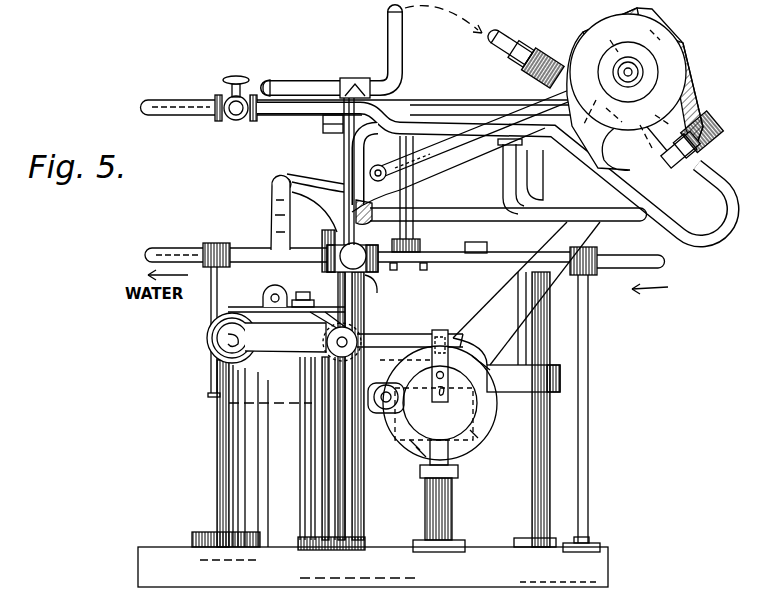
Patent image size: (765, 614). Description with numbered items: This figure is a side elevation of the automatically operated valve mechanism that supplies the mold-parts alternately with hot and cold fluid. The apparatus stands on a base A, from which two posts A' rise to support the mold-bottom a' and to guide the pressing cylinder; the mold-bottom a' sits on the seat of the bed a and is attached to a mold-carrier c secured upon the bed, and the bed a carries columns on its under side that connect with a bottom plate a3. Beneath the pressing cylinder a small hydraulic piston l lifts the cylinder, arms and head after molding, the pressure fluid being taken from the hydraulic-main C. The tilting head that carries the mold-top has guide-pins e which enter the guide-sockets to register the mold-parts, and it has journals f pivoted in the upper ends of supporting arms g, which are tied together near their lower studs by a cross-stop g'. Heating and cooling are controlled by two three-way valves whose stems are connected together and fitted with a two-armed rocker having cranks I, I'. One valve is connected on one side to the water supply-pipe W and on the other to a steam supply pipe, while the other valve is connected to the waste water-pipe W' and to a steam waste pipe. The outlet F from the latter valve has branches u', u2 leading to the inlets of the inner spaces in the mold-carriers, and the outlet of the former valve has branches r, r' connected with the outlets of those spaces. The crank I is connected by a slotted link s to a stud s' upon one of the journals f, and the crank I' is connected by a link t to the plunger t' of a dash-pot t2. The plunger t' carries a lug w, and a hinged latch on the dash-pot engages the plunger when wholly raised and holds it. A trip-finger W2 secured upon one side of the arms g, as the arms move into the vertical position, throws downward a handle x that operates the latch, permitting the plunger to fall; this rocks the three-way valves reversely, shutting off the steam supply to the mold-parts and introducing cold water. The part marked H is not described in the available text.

The base A is at (373, 567).
The posts A' is at (427, 411).
The small hydraulic piston l is at (425, 506).
The dash-pot t2 is at (217, 450).
The waste water-pipe W' is at (236, 308).
The bottom plate a3 is at (565, 240).
The hydraulic-main C is at (630, 270).
The water supply-pipe W is at (199, 112).
The mold-bottom a' is at (427, 94).
The branch r is at (333, 54).
The branch r' is at (452, 52).
The bracket H is at (323, 131).
The branch u2 is at (441, 122).
The branch u' is at (508, 187).
The slotted link s is at (500, 124).
The mold-carrier c is at (612, 132).
The journals f is at (660, 81).
The stud s' is at (665, 65).
The guide-pins e is at (670, 168).
The crank I is at (321, 169).
The crank I' is at (280, 167).
The bed a is at (314, 188).
The outlet F is at (395, 195).
The link t is at (267, 212).
The plunger t' is at (286, 292).
The lug w is at (303, 291).
The handle x is at (416, 333).
The trip-finger W2 is at (442, 330).
The supporting arms g is at (490, 341).
The cross-stop g' is at (383, 425).